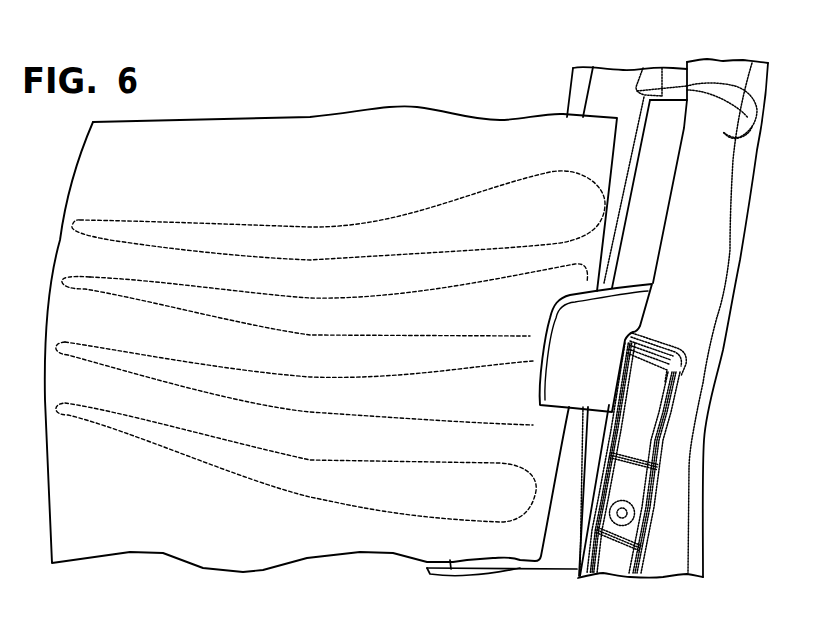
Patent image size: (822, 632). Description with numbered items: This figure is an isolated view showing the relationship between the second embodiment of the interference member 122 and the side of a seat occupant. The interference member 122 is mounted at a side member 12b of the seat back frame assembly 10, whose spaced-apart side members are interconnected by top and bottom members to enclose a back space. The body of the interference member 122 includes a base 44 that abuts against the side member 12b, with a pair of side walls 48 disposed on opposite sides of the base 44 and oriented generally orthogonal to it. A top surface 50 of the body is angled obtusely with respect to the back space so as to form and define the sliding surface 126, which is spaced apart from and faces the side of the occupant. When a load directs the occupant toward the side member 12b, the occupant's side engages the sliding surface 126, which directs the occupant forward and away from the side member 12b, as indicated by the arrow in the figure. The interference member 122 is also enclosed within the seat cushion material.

The seat back frame assembly 10 is at (655, 52).
The side member 12b is at (763, 88).
The base 44 is at (595, 360).
The side walls 48 is at (632, 280).
The top surface 50 is at (325, 315).
The sliding surface 126 is at (530, 343).
The interference member 122 is at (512, 389).